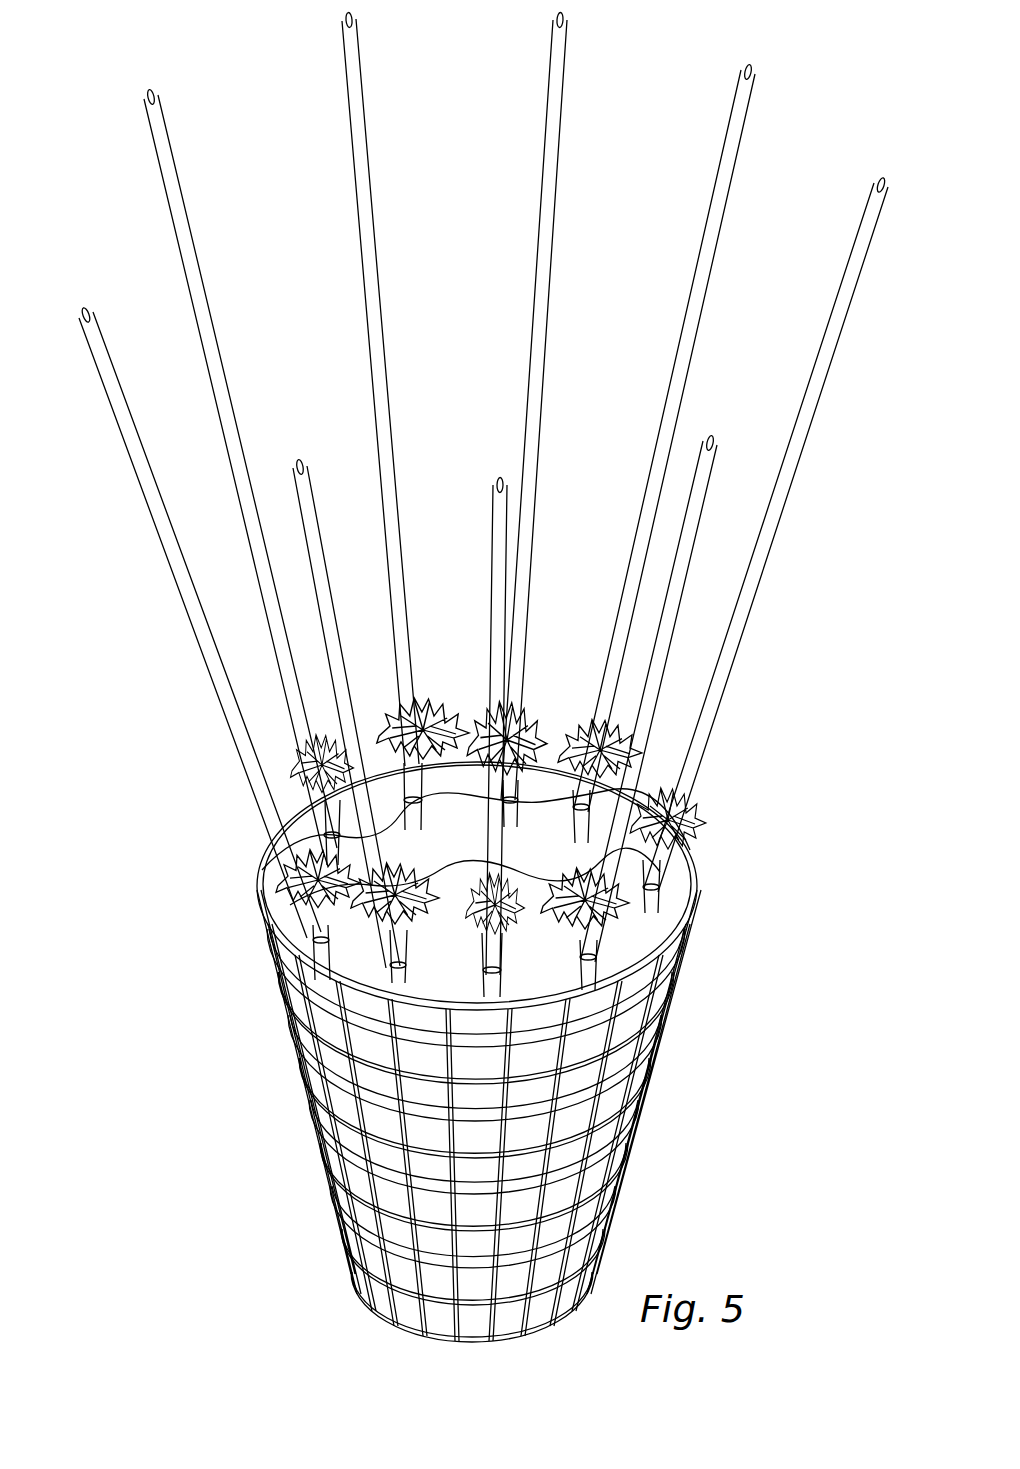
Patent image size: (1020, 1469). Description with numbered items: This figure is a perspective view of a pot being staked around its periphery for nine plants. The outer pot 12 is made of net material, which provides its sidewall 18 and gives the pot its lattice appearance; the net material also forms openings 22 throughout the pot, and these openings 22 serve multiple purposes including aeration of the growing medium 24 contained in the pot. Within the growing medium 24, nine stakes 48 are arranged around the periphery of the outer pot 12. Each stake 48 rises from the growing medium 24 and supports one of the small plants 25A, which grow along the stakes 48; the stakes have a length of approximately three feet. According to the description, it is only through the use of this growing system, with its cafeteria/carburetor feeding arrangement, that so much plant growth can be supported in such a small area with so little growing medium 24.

The outer pot 12 is at (471, 1052).
The sidewall 18 is at (668, 1000).
The openings 22 is at (313, 1012).
The growing medium 24 is at (472, 866).
The small plants 25A is at (300, 850).
The stakes 48 is at (165, 174).